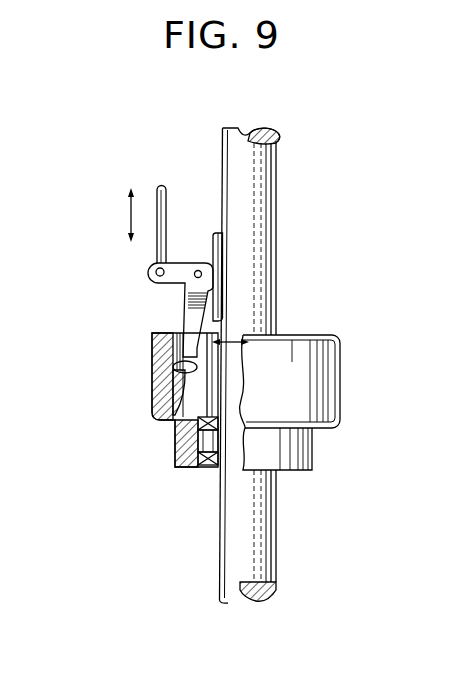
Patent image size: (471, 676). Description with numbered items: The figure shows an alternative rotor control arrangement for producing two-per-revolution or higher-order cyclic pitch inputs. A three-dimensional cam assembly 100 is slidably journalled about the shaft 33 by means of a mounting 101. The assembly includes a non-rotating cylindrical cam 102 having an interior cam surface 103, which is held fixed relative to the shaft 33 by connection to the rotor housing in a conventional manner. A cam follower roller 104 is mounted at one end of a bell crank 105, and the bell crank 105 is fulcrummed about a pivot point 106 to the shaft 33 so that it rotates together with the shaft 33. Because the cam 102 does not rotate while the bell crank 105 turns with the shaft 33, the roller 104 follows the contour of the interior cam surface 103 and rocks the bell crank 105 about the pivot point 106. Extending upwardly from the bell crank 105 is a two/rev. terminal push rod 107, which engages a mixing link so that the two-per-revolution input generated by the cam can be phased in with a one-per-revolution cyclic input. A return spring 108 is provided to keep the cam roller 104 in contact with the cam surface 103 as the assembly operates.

The shaft 33 is at (257, 530).
The three-dimensional cam assembly 100 is at (348, 362).
The mounting 101 is at (197, 470).
The non-rotating cylindrical cam 102 is at (290, 381).
The interior cam surface 103 is at (182, 395).
The cam follower roller 104 is at (173, 366).
The bell crank 105 is at (150, 284).
The pivot point 106 is at (198, 271).
The two/rev. terminal push rod 107 is at (160, 187).
The return spring 108 is at (213, 332).